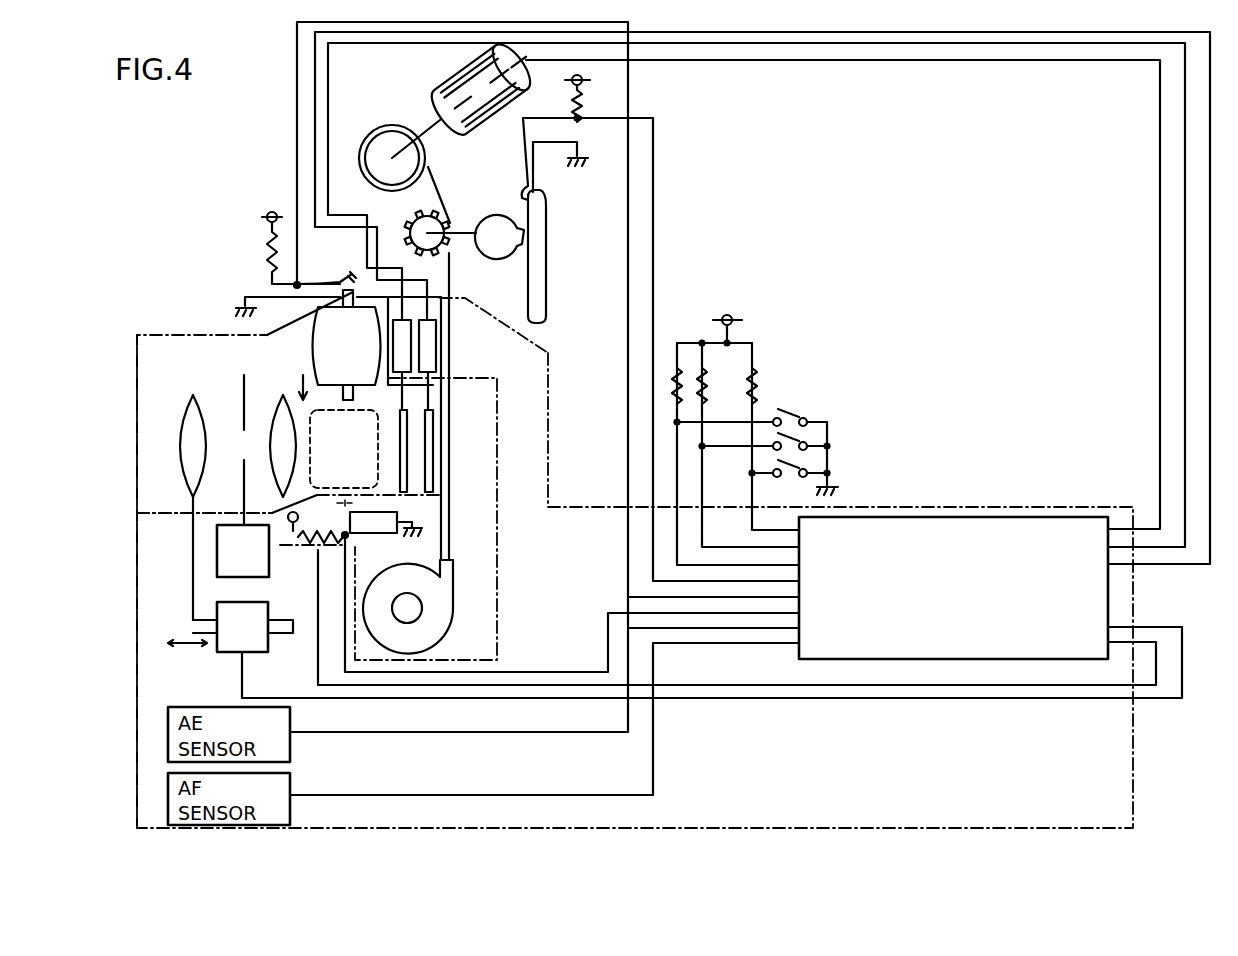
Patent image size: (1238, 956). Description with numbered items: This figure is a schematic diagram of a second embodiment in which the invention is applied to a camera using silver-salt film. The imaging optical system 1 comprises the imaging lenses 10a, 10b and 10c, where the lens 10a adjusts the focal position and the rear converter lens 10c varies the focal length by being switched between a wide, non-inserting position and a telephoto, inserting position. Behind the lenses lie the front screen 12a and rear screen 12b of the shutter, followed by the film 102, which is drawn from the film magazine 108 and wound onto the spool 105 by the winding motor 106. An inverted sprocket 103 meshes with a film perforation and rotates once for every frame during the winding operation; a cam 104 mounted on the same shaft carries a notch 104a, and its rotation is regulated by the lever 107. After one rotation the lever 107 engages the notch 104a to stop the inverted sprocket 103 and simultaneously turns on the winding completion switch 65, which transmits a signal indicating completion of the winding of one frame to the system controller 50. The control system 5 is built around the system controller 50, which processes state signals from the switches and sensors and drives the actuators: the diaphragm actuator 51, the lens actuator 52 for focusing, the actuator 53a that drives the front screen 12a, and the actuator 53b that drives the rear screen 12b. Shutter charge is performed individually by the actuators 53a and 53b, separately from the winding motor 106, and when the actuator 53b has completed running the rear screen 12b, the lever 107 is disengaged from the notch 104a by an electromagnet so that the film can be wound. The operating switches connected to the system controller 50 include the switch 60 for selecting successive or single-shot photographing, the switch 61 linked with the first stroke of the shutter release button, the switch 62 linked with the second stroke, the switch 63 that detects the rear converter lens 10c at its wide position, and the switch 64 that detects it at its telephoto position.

The imaging optical system 1 is at (137, 340).
The control system 5 is at (137, 530).
The imaging lens 10a is at (209, 491).
The imaging lens 10b is at (278, 430).
The rear converter lens 10c is at (312, 346).
The front screen of shutter 12a is at (405, 405).
The rear screen of shutter 12b is at (430, 406).
The system controller 50 is at (1035, 517).
The diaphragm actuator 51 is at (217, 558).
The lens actuator 52 is at (266, 602).
The actuator for front screen 53a is at (522, 282).
The actuator for rear screen 53b is at (436, 330).
The switch SCSW 60 is at (786, 470).
The switch SW1 61 is at (788, 416).
The switch SW2 62 is at (805, 436).
The switch WSW 63 is at (345, 276).
The switch TSW 64 is at (335, 502).
The winding completion switch 65 is at (526, 186).
The film 102 is at (448, 500).
The inverted sprocket 103 is at (407, 252).
The cam 104 is at (485, 217).
The notch 104a is at (522, 255).
The spool 105 is at (362, 135).
The winding motor 106 is at (437, 96).
The lever 107 is at (545, 200).
The film magazine 108 is at (452, 600).